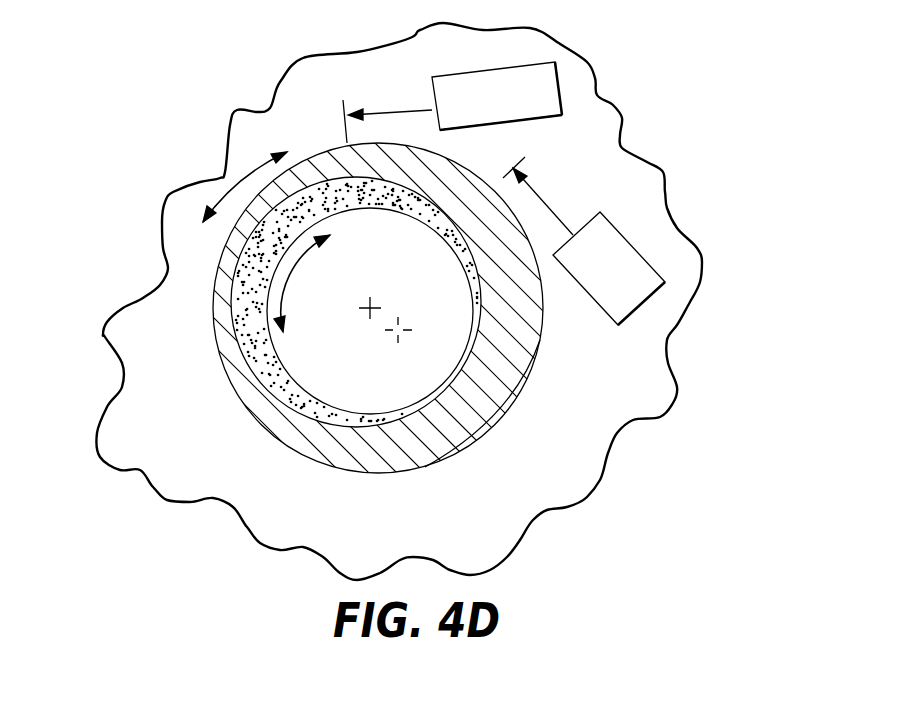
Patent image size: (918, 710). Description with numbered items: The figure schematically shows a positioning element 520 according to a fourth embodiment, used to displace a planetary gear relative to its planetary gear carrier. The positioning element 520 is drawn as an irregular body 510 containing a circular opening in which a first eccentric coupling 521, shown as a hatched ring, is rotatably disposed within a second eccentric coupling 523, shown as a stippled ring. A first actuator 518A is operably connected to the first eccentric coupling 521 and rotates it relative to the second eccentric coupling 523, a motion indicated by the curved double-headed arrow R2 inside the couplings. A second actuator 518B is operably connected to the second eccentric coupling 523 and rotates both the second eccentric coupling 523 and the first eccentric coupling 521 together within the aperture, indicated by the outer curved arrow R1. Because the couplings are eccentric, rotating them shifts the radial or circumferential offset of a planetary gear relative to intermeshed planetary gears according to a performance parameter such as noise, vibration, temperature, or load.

The wafer substrate 510 is at (447, 535).
The first actuator 518A is at (466, 109).
The second actuator 518B is at (582, 288).
The positioning element 520 is at (568, 347).
The first eccentric coupling 521 is at (497, 368).
The second eccentric coupling 523 is at (335, 425).
The outer rotation direction R1 is at (225, 192).
The inner rotation direction R2 is at (285, 342).